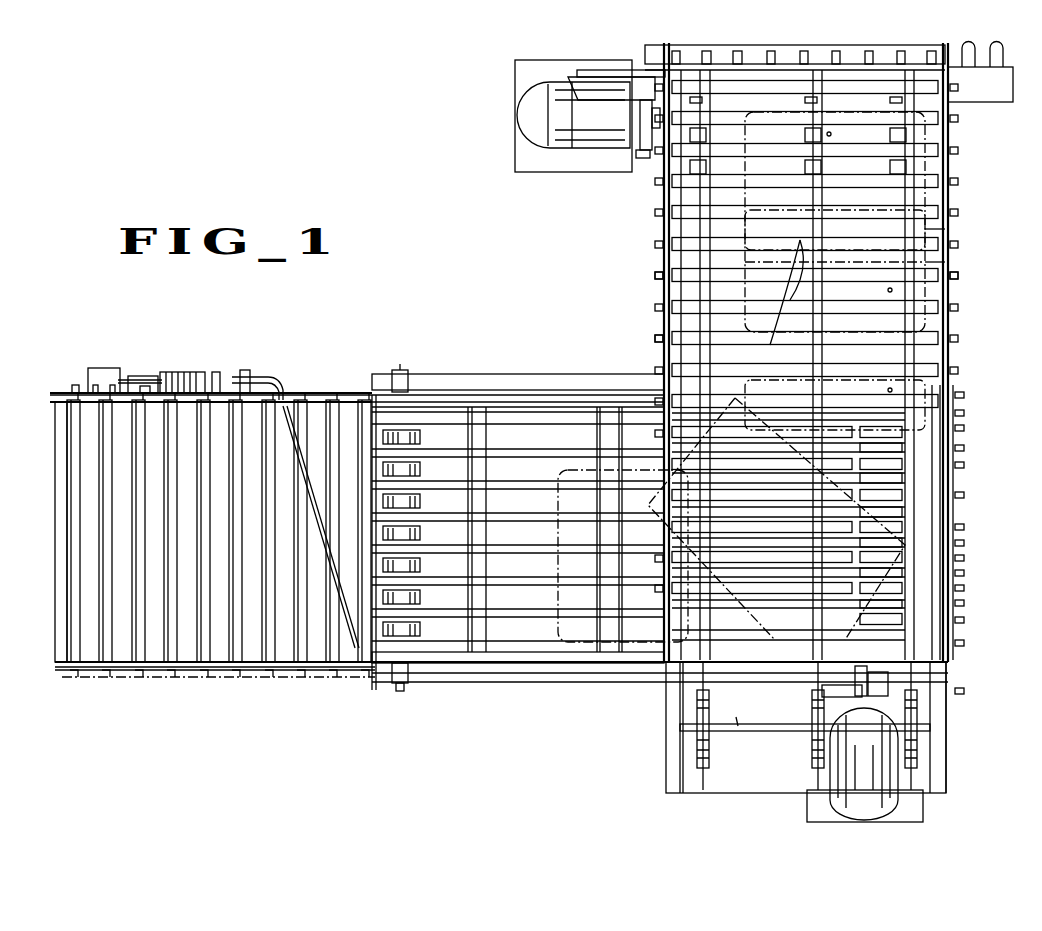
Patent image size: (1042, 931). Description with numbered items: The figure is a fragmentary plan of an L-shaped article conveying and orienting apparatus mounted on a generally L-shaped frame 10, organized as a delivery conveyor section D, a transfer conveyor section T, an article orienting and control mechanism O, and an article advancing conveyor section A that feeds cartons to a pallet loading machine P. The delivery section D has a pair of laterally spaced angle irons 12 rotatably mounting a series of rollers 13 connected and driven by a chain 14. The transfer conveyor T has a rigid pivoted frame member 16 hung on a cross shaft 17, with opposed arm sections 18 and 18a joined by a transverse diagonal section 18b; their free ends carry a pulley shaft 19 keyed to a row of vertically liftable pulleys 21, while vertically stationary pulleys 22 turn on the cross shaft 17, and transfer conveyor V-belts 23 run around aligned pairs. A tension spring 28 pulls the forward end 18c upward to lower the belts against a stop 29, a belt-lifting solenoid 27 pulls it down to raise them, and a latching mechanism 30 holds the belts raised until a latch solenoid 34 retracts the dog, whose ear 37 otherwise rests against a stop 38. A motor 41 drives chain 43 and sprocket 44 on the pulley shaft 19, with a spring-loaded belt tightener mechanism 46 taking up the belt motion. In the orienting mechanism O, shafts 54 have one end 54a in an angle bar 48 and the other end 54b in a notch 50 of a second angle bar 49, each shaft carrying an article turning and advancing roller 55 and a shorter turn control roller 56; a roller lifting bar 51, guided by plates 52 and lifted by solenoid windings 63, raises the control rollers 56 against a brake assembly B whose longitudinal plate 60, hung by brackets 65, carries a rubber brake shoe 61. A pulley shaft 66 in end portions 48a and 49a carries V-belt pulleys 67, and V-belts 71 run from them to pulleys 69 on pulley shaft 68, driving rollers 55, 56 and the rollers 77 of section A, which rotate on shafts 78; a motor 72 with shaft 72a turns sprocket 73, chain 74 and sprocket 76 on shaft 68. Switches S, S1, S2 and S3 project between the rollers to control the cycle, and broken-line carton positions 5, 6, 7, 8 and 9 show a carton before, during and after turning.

The article advancing conveyor section A is at (647, 242).
The pallet loading machine P is at (957, 76).
The carton position 9 is at (935, 133).
The pulleys 69 is at (695, 170).
The pulley shaft 68 is at (740, 138).
The switch S3 is at (829, 136).
The rollers 77 is at (971, 187).
The V-belts 71 is at (745, 231).
The pulley shaft 19 is at (851, 393).
The shafts 78 is at (956, 213).
The carton position 8 is at (948, 229).
The carton position 7 is at (948, 262).
The switch S2 is at (892, 291).
The switch S1 is at (892, 390).
The angle bar 48 is at (655, 338).
The vertically liftable pulleys 21 is at (865, 676).
The shafts 54 is at (881, 528).
The turn control roller 56 is at (788, 526).
The article turning and advancing roller 55 is at (665, 528).
The carton position 6 is at (640, 470).
The shaft end 54a is at (658, 592).
The second angle bar 49 is at (955, 378).
The guide plates 52 is at (965, 393).
The brackets 65 is at (965, 411).
The solenoid windings 63 is at (965, 427).
The brake assembly B is at (960, 447).
The shaft end 54b is at (965, 495).
The switch S is at (940, 520).
The article orienting and control mechanism O is at (971, 539).
The roller lifting bar 51 is at (965, 543).
The notch 50 is at (965, 575).
The longitudinal plate 60 is at (965, 583).
The rubber brake shoe 61 is at (965, 642).
The end portion of angle iron 48a is at (668, 716).
The end portion of angle iron 49a is at (948, 712).
The V-belt pulleys 67 is at (812, 755).
The motor 41 is at (842, 774).
The spring-loaded belt tightener mechanism 46 is at (838, 690).
The chain 43 is at (852, 700).
The sprocket 44 is at (862, 712).
The pulley shaft 66 is at (733, 710).
The motor 72 is at (525, 120).
The sprocket 73 is at (650, 78).
The motor shaft 72a is at (645, 120).
The chain 74 is at (642, 140).
The sprocket 76 is at (644, 160).
The transfer conveyor section T is at (549, 370).
The arm section 18a is at (565, 380).
The arm section 18 is at (570, 672).
The pivoted frame member 16 is at (381, 365).
The cross shaft 17 is at (403, 370).
The vertically stationary pulleys 22 is at (445, 444).
The transfer conveyor V-belts 23 is at (548, 427).
The carton position 5 is at (548, 530).
The frame 10 is at (505, 387).
The rollers 13 is at (130, 530).
The angle irons 12 is at (52, 405).
The chain 14 is at (255, 680).
The transverse diagonal section 18b is at (288, 400).
The forward end of pivotal frame 18c is at (240, 380).
The latch solenoid 34 is at (90, 368).
The delivery conveyor section D is at (68, 373).
The stop 38 is at (135, 378).
The ear 37 is at (150, 376).
The latching mechanism 30 is at (154, 372).
The belt-lifting solenoid 27 is at (182, 372).
The tension spring 28 is at (216, 372).
The stop 29 is at (243, 370).